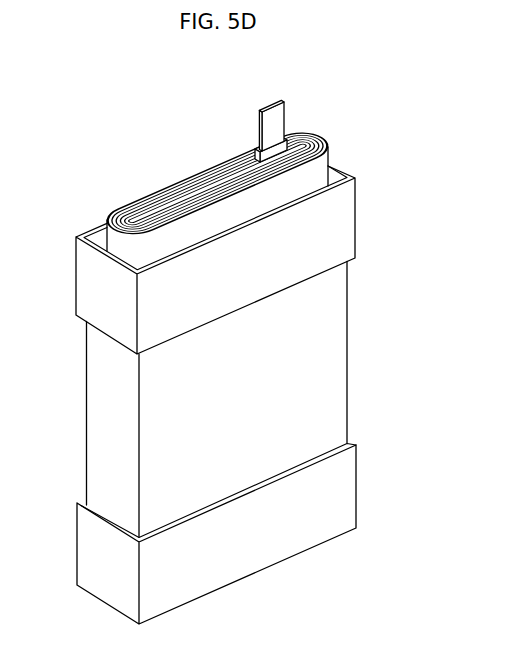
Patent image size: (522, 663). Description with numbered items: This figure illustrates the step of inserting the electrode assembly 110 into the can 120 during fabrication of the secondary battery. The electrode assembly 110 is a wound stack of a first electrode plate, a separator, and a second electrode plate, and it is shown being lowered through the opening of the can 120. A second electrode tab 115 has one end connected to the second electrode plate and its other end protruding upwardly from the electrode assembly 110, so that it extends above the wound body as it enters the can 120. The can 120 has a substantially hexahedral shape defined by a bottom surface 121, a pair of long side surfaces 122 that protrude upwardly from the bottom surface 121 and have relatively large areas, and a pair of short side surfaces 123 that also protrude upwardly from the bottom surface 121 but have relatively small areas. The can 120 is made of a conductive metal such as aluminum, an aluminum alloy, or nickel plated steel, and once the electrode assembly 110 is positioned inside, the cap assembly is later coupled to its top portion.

The electrode assembly 110 is at (247, 160).
The second electrode tab 115 is at (270, 118).
The can 120 is at (222, 395).
The bottom surface 121 is at (250, 574).
The long side surfaces 122 is at (153, 474).
The short side surfaces 123 is at (98, 379).